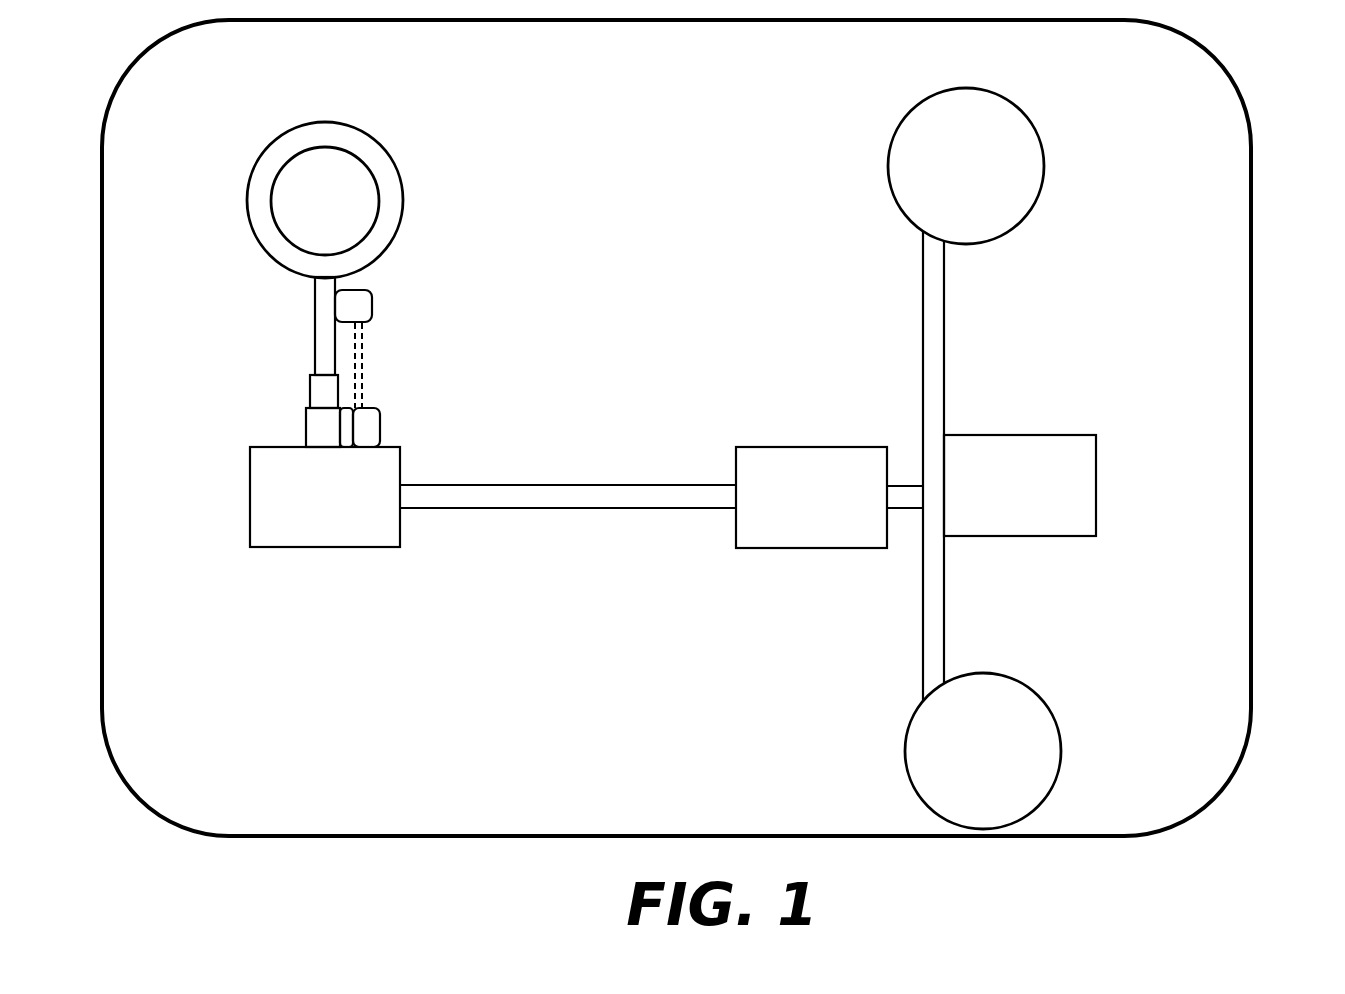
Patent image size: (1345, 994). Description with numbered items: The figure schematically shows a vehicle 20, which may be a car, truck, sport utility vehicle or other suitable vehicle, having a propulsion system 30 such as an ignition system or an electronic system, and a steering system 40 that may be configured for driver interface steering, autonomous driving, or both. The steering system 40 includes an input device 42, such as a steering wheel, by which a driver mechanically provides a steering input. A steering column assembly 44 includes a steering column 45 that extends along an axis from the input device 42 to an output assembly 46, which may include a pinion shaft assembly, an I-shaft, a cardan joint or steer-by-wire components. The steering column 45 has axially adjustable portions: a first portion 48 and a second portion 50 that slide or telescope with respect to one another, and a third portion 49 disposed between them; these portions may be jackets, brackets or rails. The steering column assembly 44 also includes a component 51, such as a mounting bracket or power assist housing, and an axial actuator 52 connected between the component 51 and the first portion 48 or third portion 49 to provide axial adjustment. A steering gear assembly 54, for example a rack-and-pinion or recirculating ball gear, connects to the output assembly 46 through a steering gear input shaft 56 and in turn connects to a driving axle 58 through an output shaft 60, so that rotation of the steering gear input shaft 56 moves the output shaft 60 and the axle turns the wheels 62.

The vehicle 20 is at (1269, 69).
The propulsion system 30 is at (1008, 501).
The steering system 40 is at (1114, 156).
The input device 42 is at (252, 165).
The steering column assembly 44 is at (462, 306).
The steering column 45 is at (281, 343).
The output assembly 46 is at (312, 512).
The first portion 48 is at (303, 315).
The third portion 49 is at (300, 390).
The second portion 50 is at (296, 424).
The component 51 is at (359, 391).
The axial actuator 52 is at (392, 422).
The steering gear assembly 54 is at (799, 513).
The steering gear input shaft 56 is at (711, 487).
The driving axle 58 is at (940, 548).
The output shaft 60 is at (914, 487).
The wheels 62 is at (1022, 222).